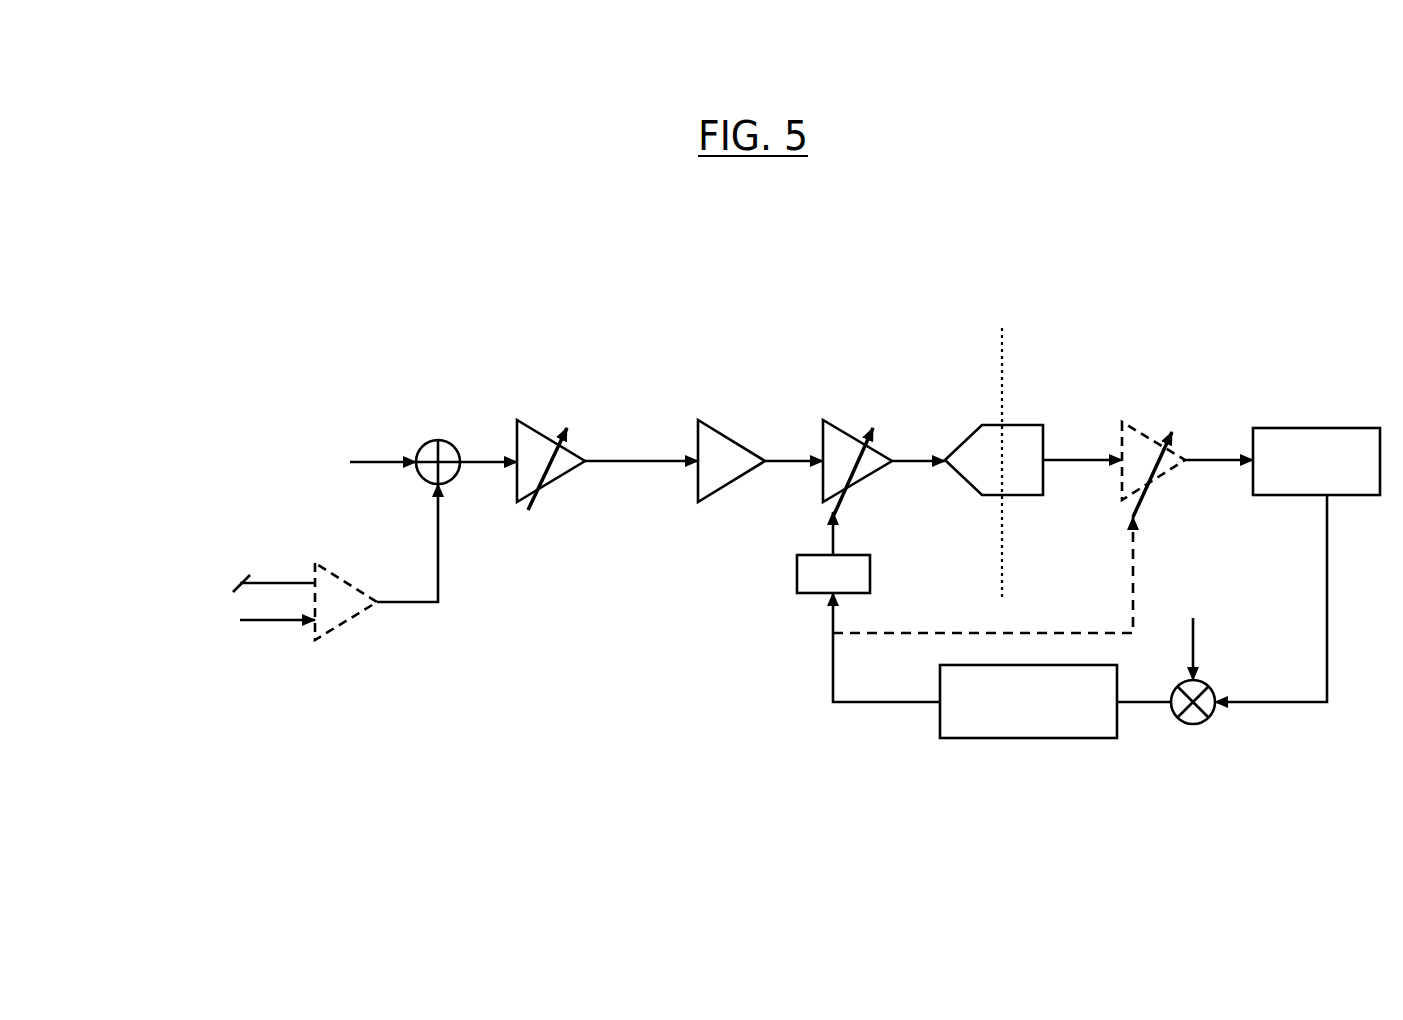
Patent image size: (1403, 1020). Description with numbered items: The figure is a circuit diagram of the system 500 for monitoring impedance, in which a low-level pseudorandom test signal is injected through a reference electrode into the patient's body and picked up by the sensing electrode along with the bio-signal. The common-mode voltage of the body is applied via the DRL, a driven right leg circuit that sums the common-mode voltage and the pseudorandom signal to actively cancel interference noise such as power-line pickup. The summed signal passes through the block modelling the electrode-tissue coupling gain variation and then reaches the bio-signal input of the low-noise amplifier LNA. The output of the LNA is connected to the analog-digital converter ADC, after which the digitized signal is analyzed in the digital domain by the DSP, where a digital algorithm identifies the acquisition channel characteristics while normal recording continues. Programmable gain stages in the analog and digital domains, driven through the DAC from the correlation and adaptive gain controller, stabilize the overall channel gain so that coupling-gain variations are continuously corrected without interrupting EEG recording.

The system 500 is at (333, 241).
The low-noise amplifier LNA is at (731, 461).
The analog-digital converter ADC is at (994, 460).
The digital-to-analog converter DAC is at (868, 607).
The digital signal processor DSP is at (1297, 565).
The driven right leg circuit DRL is at (335, 562).